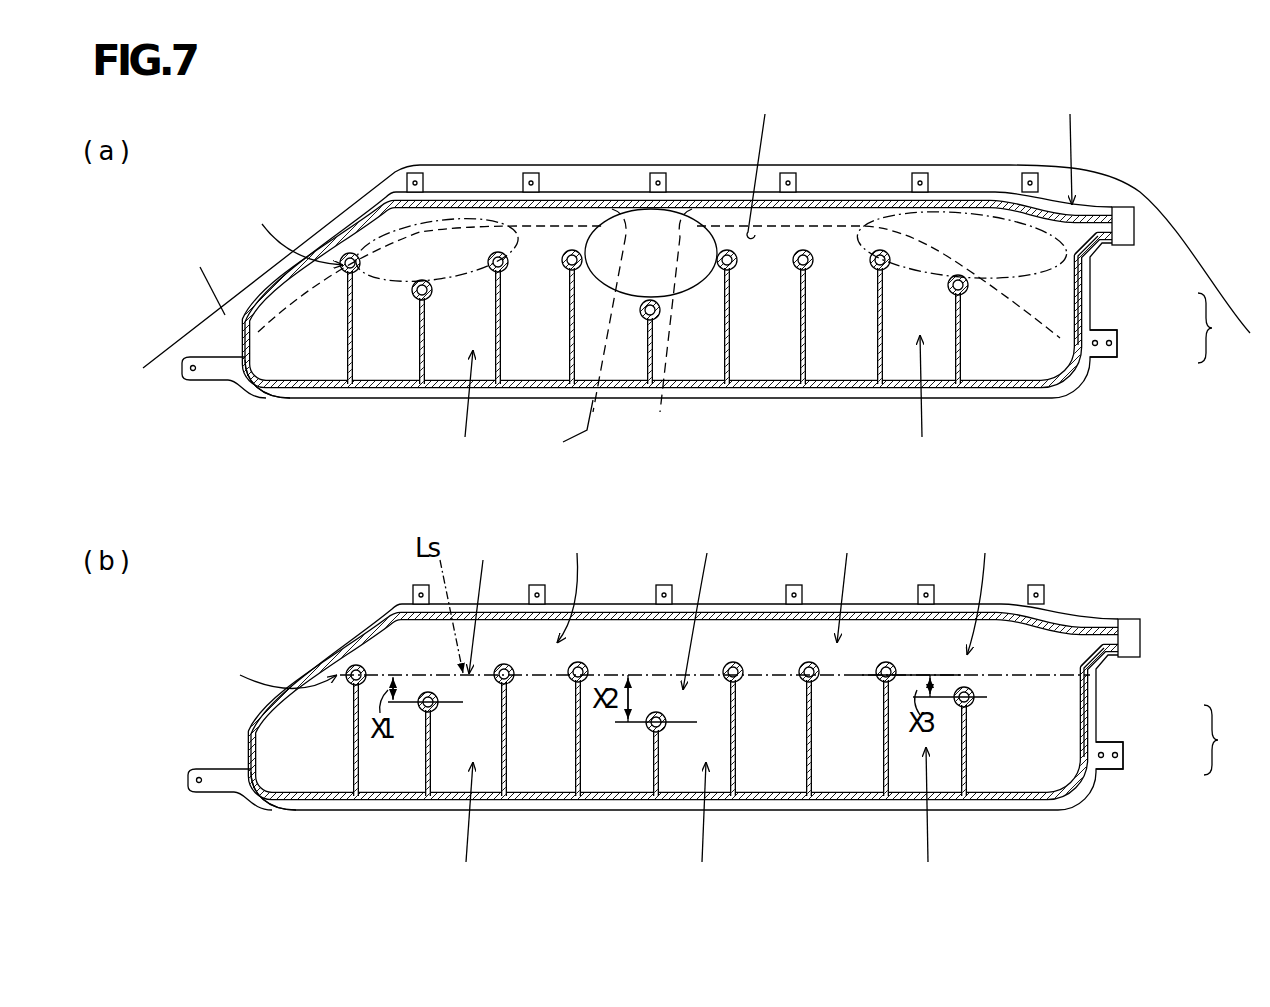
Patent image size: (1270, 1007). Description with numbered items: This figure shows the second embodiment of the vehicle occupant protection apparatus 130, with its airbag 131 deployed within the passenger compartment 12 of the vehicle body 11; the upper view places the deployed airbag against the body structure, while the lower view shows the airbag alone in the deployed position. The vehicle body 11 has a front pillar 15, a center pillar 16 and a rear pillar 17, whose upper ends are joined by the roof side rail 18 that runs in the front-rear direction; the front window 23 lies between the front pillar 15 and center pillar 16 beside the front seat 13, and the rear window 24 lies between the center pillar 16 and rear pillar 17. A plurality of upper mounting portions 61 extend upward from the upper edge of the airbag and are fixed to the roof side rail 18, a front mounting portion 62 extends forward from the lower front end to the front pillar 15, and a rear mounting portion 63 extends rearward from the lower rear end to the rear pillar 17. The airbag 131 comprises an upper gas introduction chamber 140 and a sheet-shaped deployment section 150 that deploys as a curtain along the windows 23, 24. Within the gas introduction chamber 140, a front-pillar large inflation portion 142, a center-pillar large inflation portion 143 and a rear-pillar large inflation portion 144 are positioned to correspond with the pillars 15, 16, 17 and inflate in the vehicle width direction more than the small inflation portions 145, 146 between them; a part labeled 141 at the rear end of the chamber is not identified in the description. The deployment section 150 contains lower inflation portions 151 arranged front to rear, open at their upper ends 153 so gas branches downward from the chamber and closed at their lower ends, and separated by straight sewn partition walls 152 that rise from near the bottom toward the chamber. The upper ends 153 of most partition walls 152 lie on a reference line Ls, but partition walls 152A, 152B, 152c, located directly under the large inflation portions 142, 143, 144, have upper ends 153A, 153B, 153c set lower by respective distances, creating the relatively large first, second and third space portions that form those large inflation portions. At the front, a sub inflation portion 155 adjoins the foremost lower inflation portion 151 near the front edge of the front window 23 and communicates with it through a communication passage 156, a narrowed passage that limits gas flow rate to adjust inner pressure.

The vehicle body 11 is at (183, 333).
The passenger compartment 12 is at (230, 511).
The front seat 13 is at (1224, 740).
The front pillar 15 is at (203, 277).
The center pillar 16 is at (564, 430).
The rear pillar 17 is at (1160, 262).
The roof side rail 18 is at (455, 165).
The front window 23 is at (405, 243).
The rear window 24 is at (762, 162).
The upper mounting portions 61 is at (1025, 175).
The front mounting portion 62 is at (193, 380).
The rear mounting portion 63 is at (1107, 357).
The vehicle occupant protection apparatus 130 is at (305, 178).
The airbag 131 is at (1225, 328).
The gas introduction chamber 140 is at (1093, 240).
The connector 141 is at (1126, 212).
The front-pillar large inflation portion 142 is at (522, 215).
The center-pillar large inflation portion 143 is at (697, 203).
The rear-pillar large inflation portion 144 is at (1027, 370).
The small inflation portion 145 is at (570, 218).
The small inflation portion 146 is at (808, 218).
The deployment section 150 is at (1084, 293).
The lower inflation portions 151 is at (694, 610).
The partition walls 152 is at (857, 330).
The partition wall 152A is at (420, 340).
The partition wall 152B is at (647, 325).
The partition wall 152c is at (977, 337).
The upper ends 153 is at (304, 180).
The upper end 153A is at (413, 299).
The upper end 153B is at (660, 319).
The upper end 153c is at (966, 293).
The sub inflation portion 155 is at (291, 390).
The communication passage 156 is at (269, 442).